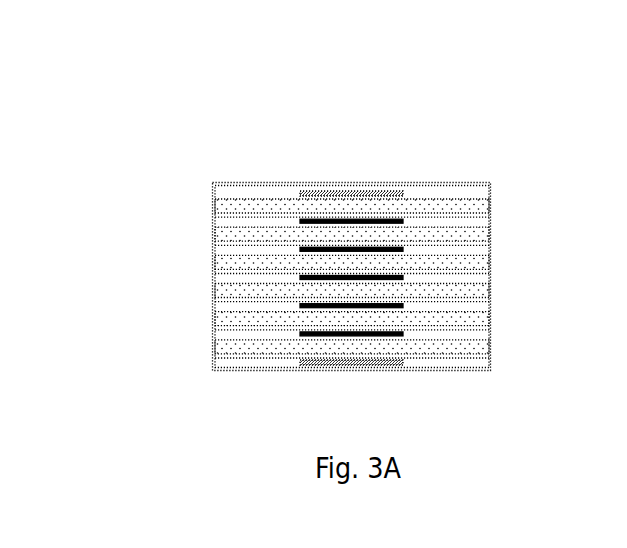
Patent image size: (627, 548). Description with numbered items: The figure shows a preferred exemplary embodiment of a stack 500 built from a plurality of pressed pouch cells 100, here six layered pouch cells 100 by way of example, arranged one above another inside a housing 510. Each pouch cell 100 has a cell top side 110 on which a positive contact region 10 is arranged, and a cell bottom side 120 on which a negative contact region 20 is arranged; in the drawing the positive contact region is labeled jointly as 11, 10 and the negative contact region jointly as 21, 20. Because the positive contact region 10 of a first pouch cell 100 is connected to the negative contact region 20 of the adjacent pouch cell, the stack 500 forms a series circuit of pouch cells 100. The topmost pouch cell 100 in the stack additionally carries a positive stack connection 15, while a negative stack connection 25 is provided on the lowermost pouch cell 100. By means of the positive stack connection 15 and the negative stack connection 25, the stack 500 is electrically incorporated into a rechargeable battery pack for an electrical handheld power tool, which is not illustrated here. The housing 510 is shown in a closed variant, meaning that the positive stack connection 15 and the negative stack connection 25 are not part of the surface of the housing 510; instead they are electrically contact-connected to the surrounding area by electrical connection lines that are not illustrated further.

The stack 500 is at (345, 218).
The housing 510 is at (465, 183).
The pouch cell 100 is at (481, 206).
The cell top side 110 is at (228, 250).
The cell bottom side 120 is at (231, 273).
The positive stack connection 15 is at (385, 190).
The negative stack connection 25 is at (390, 366).
The positive contact region 10 is at (312, 219).
The first electrode layer 11 is at (298, 250).
The negative contact region 20 is at (260, 313).
The second electrode layer 21 is at (298, 275).